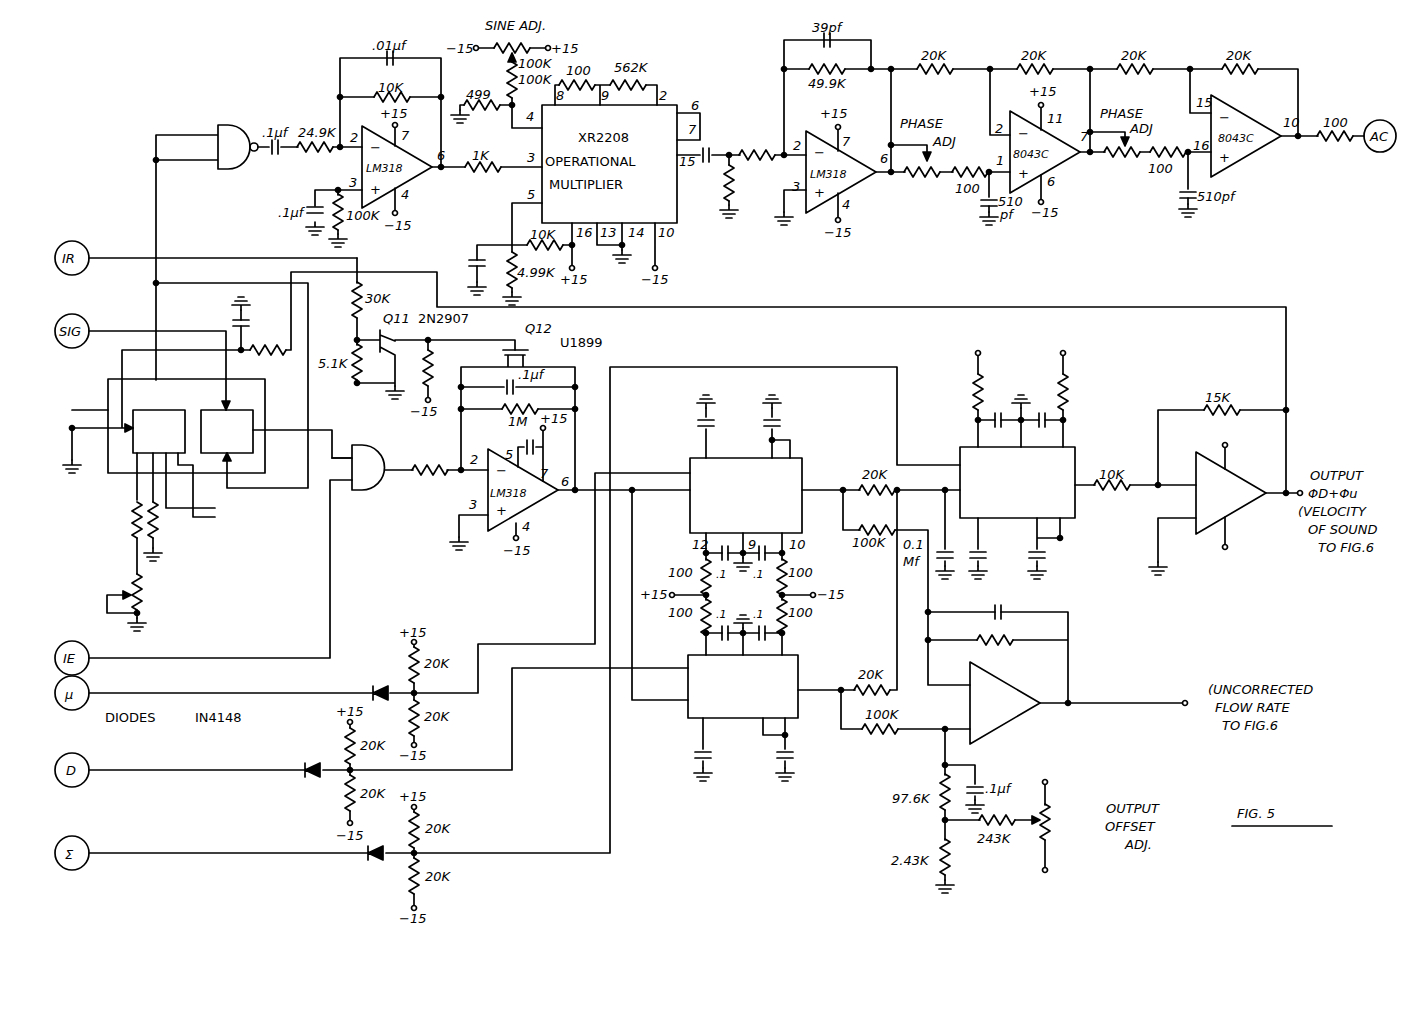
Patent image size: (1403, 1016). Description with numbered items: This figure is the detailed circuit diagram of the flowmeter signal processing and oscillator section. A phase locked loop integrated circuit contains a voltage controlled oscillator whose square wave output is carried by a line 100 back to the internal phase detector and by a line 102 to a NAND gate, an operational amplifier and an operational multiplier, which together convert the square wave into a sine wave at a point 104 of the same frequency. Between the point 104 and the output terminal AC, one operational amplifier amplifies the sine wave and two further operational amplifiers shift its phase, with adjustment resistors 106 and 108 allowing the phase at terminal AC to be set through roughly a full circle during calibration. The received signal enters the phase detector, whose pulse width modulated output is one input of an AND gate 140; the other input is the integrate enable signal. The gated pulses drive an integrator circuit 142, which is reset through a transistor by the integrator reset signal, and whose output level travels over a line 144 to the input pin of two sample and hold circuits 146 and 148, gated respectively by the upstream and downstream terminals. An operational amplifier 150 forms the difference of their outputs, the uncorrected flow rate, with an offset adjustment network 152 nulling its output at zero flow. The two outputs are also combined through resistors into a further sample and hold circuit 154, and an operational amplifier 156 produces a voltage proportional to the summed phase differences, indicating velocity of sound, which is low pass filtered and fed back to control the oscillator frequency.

The line 100 is at (275, 490).
The line 102 is at (157, 222).
The point 104 is at (730, 142).
The adjustment resistor 106 is at (948, 183).
The adjustment resistor 108 is at (1108, 162).
The AND gate 140 is at (358, 491).
The integrator circuit 142 is at (428, 482).
The line 144 is at (636, 578).
The sample and hold circuit 146 is at (803, 465).
The sample and hold circuit 148 is at (802, 664).
The operational amplifier 150 is at (1015, 718).
The offset adjustment network 152 is at (1012, 856).
The sample and hold circuit 154 is at (1078, 498).
The operational amplifier 156 is at (1252, 476).